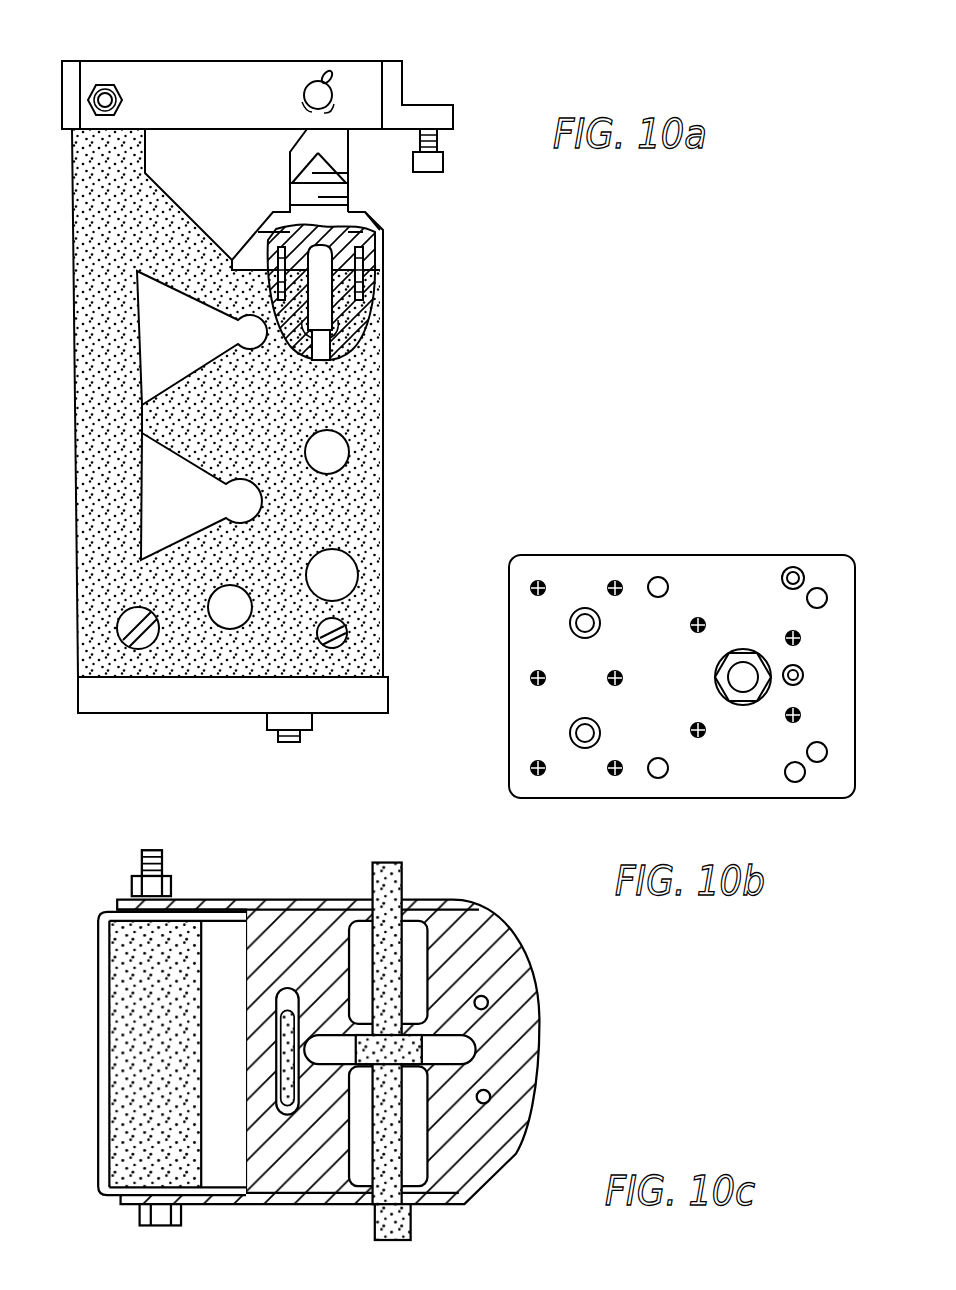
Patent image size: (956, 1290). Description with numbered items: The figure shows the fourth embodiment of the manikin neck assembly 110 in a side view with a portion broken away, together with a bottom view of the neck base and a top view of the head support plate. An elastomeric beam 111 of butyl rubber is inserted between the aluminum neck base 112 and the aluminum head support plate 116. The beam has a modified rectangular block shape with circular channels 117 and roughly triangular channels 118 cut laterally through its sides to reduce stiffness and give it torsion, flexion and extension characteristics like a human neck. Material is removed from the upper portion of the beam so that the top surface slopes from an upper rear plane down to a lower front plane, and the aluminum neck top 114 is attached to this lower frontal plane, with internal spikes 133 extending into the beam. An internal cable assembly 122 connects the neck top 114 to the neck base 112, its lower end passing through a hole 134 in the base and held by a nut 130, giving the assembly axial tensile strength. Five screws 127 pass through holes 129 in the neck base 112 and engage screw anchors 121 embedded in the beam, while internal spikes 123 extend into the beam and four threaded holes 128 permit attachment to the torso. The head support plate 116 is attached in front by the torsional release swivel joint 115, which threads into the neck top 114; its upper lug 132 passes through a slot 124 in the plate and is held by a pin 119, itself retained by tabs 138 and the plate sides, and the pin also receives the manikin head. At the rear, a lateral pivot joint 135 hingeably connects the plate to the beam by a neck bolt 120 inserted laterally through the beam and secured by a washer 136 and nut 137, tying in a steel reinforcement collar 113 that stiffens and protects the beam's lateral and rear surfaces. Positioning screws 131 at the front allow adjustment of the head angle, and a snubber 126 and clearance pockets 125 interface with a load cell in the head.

In FIG. 10A, the neck assembly 110 is at (117, 245).
In FIG. 10A, the elastomeric beam 111 is at (66, 340).
In FIG. 10A, the neck base 112 is at (180, 717).
In FIG. 10B, the neck base 112 is at (630, 555).
In FIG. 10A, the reinforcement collar 113 is at (63, 98).
In FIG. 10C, the reinforcement collar 113 is at (94, 1022).
In FIG. 10A, the neck top 114 is at (388, 248).
In FIG. 10A, the torsional release swivel joint 115 is at (348, 198).
In FIG. 10A, the head support plate 116 is at (231, 61).
In FIG. 10C, the head support plate 116 is at (472, 1121).
In FIG. 10A, the circular channels 117 is at (349, 451).
In FIG. 10A, the triangular channels 118 is at (190, 511).
In FIG. 10A, the pin 119 is at (312, 82).
In FIG. 10C, the pin 119 is at (350, 858).
In FIG. 10A, the neck bolt 120 is at (112, 92).
In FIG. 10C, the neck bolt 120 is at (141, 847).
In FIG. 10A, the screw anchors 121 is at (146, 611).
In FIG. 10A, the cable assembly 122 is at (341, 346).
In FIG. 10B, the internal spikes 123 is at (538, 582).
In FIG. 10C, the slot 124 is at (436, 1026).
In FIG. 10C, the clearance pockets 125 is at (433, 900).
In FIG. 10C, the snubber 126 is at (262, 970).
In FIG. 10B, the screws 127 is at (803, 570).
In FIG. 10B, the threaded holes 128 is at (658, 778).
In FIG. 10B, the holes 129 is at (786, 567).
In FIG. 10A, the nut 130 is at (312, 722).
In FIG. 10B, the nut 130 is at (762, 690).
In FIG. 10A, the positioning screws 131 is at (444, 162).
In FIG. 10C, the positioning screws 131 is at (536, 1037).
In FIG. 10C, the upper lug 132 is at (361, 1092).
In FIG. 10A, the internal spikes 133 is at (370, 283).
In FIG. 10B, the hole 134 is at (762, 660).
In FIG. 10A, the pivot joint 135 is at (86, 80).
In FIG. 10C, the pivot joint 135 is at (148, 1184).
In FIG. 10C, the washer 136 is at (116, 889).
In FIG. 10C, the nut 137 is at (122, 870).
In FIG. 10C, the tabs 138 is at (397, 1040).